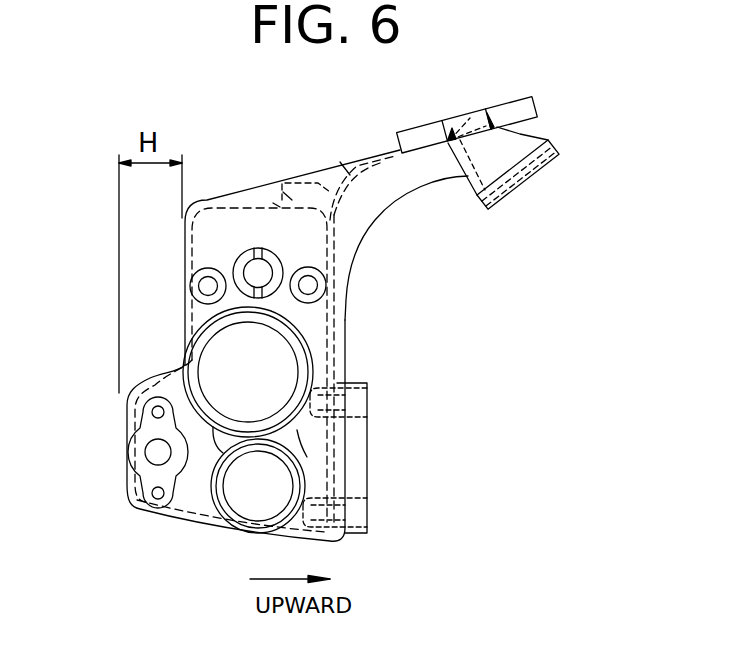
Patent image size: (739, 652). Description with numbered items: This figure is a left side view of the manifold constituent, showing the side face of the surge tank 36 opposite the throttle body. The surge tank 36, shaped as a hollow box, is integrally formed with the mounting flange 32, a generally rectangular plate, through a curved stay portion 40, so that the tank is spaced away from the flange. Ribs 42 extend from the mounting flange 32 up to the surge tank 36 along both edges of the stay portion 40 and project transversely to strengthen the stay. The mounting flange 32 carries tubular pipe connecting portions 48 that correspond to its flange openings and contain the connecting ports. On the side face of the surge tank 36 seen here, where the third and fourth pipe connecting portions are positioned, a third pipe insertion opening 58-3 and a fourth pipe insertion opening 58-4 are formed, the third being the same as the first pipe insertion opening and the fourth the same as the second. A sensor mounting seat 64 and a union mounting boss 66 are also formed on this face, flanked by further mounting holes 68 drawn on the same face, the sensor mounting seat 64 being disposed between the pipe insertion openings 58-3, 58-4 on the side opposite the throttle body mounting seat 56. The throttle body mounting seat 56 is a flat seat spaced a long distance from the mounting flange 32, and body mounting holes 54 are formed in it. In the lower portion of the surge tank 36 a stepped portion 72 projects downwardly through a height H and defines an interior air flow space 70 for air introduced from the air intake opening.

The mounting flange 32 is at (530, 110).
The surge tank 36 is at (199, 526).
The stay portion 40 is at (343, 170).
The ribs 42 is at (383, 200).
The tubular pipe connecting portions 48 is at (537, 132).
The body mounting holes 54 is at (350, 402).
The throttle body mounting seat 56 is at (357, 433).
The third pipe insertion opening 58-3 is at (280, 358).
The fourth pipe insertion opening 58-4 is at (270, 483).
The sensor mounting seat 64 is at (137, 440).
The union mounting boss 66 is at (256, 250).
The mounting hole 68 is at (190, 287).
The interior air flow space 70 is at (177, 503).
The stepped portion 72 is at (153, 373).